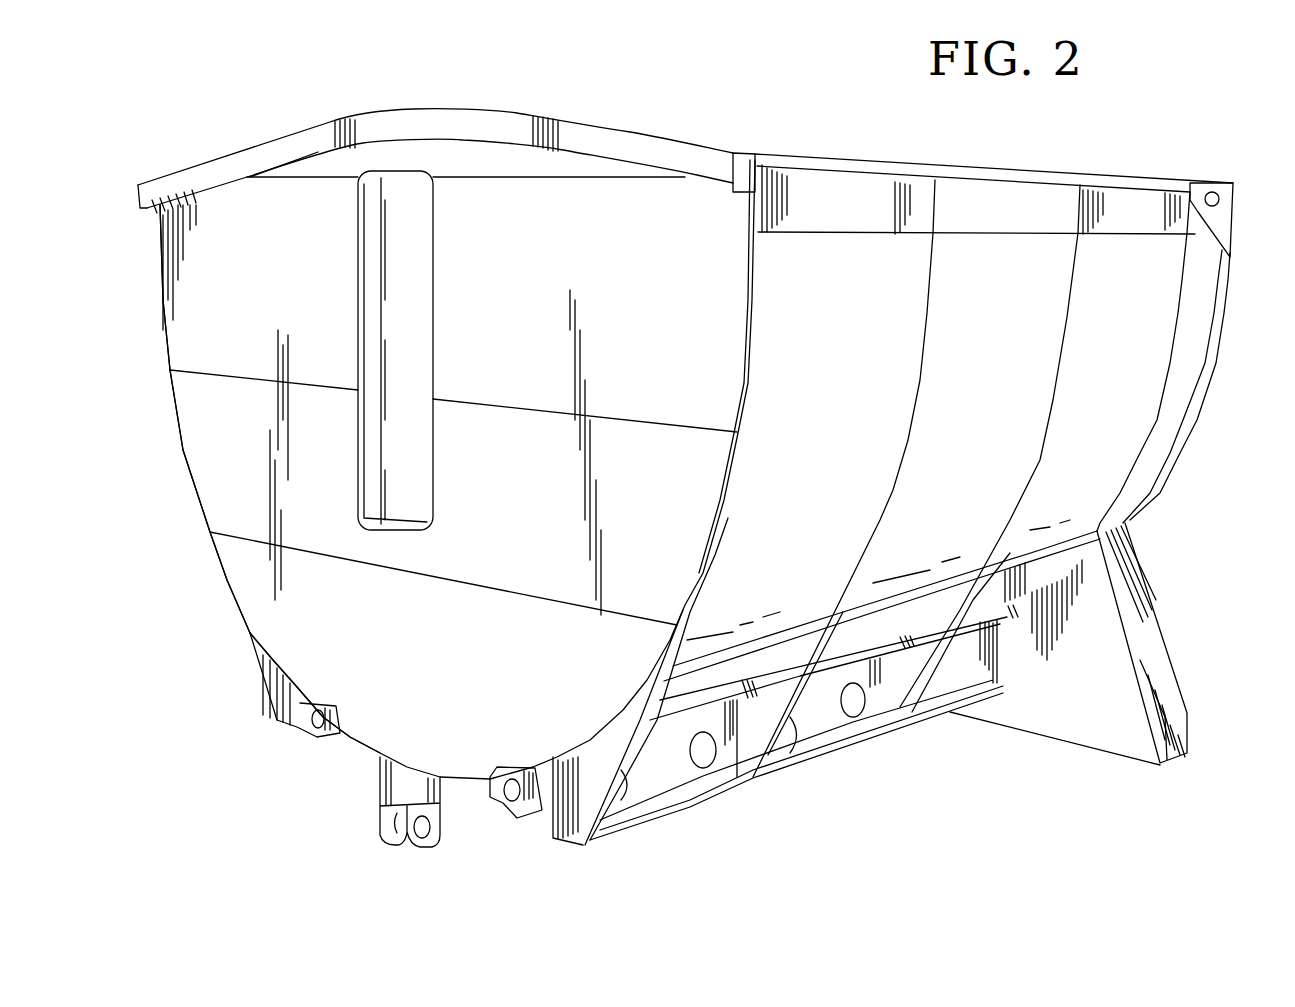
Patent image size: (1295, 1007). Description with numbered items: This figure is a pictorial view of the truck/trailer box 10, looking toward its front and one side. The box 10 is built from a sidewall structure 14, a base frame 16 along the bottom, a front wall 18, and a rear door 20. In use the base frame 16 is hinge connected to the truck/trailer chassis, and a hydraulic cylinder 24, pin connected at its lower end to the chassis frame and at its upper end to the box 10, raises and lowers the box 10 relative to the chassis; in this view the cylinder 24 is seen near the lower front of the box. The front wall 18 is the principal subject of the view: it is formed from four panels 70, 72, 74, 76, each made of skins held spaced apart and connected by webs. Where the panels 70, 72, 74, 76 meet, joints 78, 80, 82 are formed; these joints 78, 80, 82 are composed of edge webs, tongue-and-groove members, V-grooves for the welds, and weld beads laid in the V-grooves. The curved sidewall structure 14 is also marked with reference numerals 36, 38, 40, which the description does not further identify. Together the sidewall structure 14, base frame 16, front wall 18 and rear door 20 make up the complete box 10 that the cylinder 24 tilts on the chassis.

The truck/trailer box 10 is at (1113, 153).
The sidewall structure 14 is at (1135, 388).
The base frame 16 is at (817, 727).
The front wall 18 is at (180, 452).
The rear door 20 is at (1176, 460).
The hydraulic cylinder 24 is at (403, 780).
The first panel section 36 is at (848, 366).
The second panel section 38 is at (998, 358).
The third panel section 40 is at (1133, 352).
The panel 70 is at (333, 167).
The panel 72 is at (180, 325).
The panel 74 is at (217, 500).
The panel 76 is at (290, 628).
The joint 78 is at (512, 167).
The joint 80 is at (508, 403).
The joint 82 is at (492, 595).